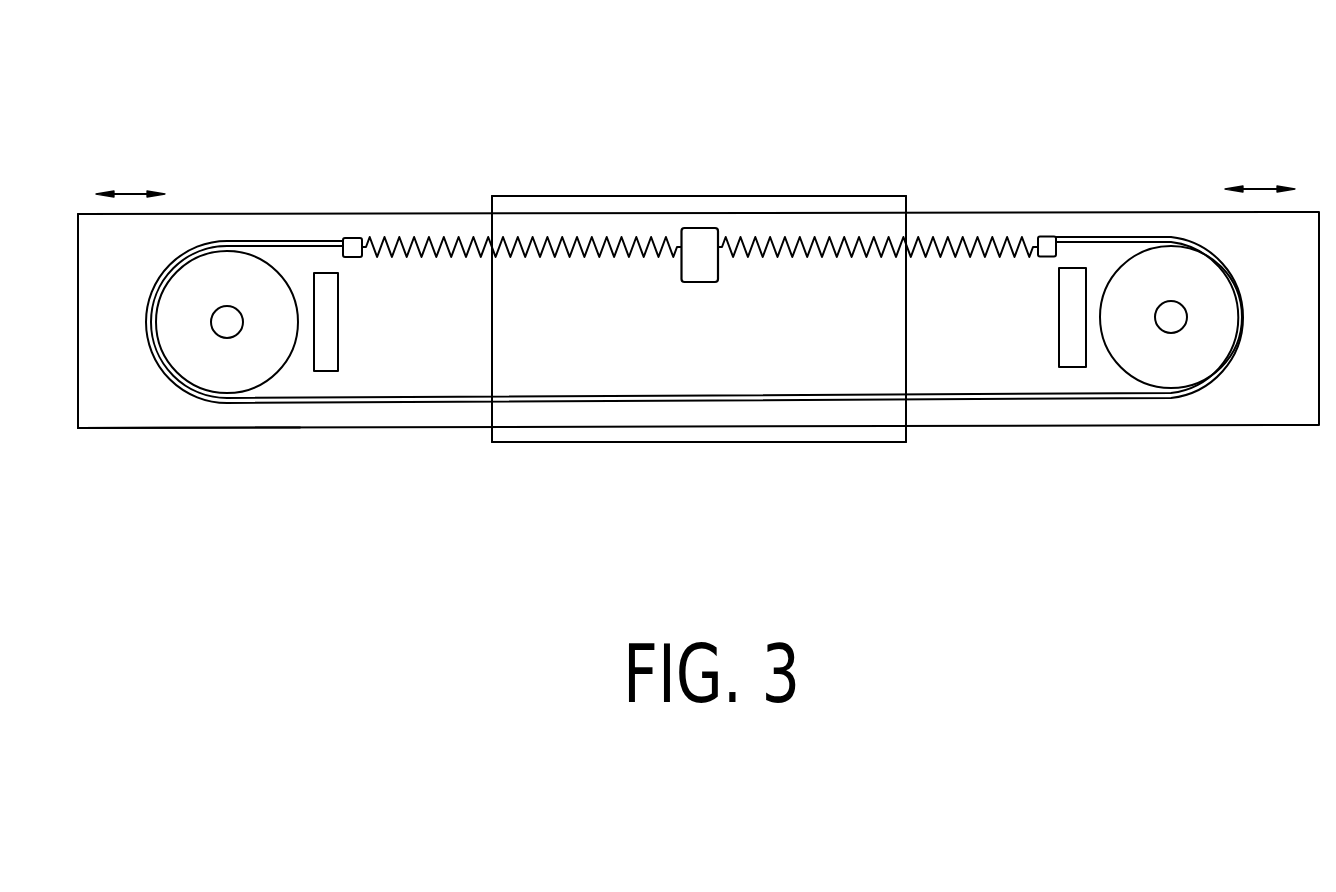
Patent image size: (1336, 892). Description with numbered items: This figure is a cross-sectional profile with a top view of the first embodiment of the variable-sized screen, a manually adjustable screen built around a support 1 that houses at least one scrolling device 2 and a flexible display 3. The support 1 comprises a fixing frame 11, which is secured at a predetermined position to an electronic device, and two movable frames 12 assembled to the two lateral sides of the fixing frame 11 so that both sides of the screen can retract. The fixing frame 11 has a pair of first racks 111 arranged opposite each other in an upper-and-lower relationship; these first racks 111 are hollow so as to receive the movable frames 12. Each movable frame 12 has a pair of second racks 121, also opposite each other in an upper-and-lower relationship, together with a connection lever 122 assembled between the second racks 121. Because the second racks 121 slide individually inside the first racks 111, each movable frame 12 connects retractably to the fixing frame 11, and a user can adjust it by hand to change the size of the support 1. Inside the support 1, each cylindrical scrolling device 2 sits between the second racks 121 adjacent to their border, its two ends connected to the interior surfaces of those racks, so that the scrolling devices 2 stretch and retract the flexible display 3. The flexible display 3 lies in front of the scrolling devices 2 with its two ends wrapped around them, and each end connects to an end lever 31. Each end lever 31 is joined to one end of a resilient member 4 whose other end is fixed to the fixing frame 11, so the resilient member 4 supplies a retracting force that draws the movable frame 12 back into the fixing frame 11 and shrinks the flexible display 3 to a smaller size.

The support 1 is at (752, 189).
The fixing frame 11 is at (635, 190).
The first racks 111 is at (713, 436).
The movable frame 12 is at (481, 203).
The second racks 121 is at (153, 417).
The connection lever 122 is at (326, 366).
The scrolling device 2 is at (223, 236).
The flexible display 3 is at (595, 401).
The end lever 31 is at (353, 238).
The resilient member 4 is at (418, 234).